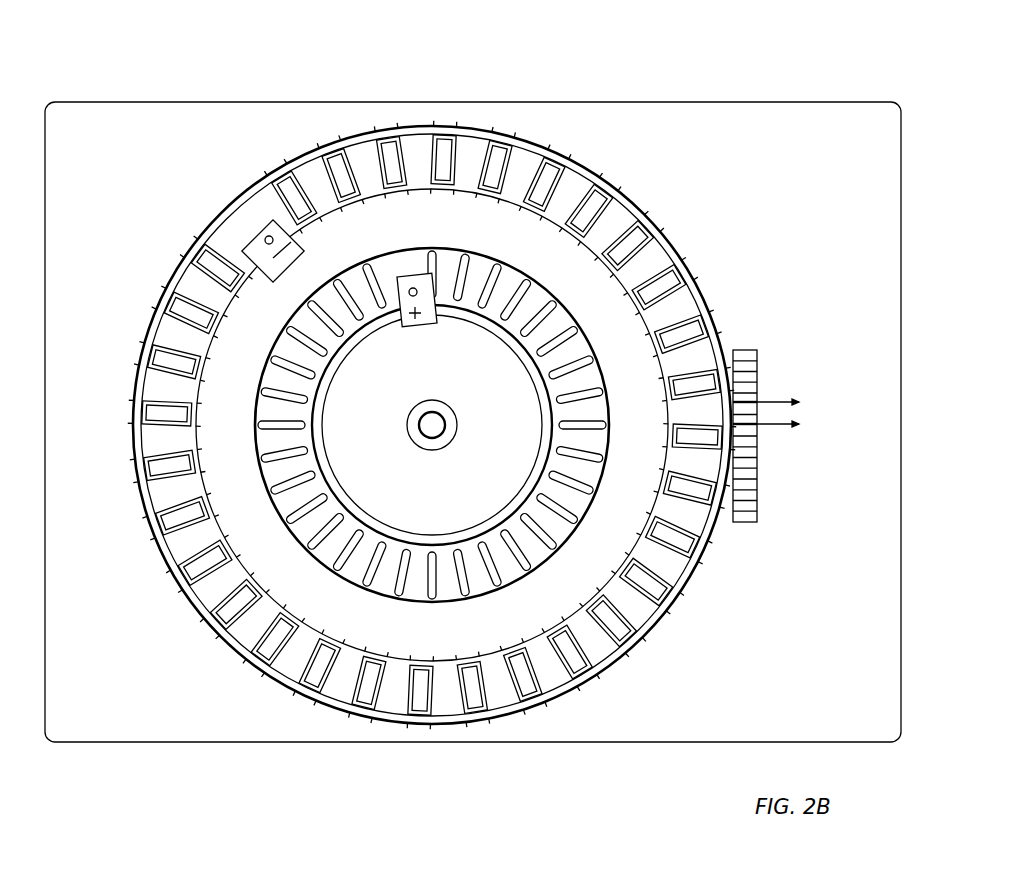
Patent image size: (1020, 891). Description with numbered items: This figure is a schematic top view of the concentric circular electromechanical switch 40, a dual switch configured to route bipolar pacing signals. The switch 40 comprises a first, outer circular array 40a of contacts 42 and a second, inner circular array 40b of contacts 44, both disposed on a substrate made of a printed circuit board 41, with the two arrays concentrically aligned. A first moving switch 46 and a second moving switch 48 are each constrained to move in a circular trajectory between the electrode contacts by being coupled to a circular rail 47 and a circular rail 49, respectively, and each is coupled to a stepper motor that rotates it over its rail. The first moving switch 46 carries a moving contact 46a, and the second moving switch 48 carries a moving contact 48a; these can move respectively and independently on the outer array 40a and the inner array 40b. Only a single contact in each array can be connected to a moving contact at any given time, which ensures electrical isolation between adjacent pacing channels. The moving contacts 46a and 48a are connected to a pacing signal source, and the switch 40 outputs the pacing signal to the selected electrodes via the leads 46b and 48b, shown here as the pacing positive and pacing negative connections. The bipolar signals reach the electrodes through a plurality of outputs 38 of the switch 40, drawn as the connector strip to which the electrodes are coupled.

The outputs 38 is at (818, 442).
The concentric circular electromechanical switch 40 is at (766, 88).
The outer circular array 40a is at (442, 424).
The inner circular array 40b is at (532, 392).
The printed circuit board 41 is at (89, 138).
The contacts 42 is at (196, 578).
The contacts 44 is at (481, 270).
The first moving switch 46 is at (223, 201).
The moving contact 46a is at (255, 241).
The lead 46b is at (762, 402).
The circular rail 47 is at (180, 337).
The second moving switch 48 is at (401, 270).
The moving contact 48a is at (414, 273).
The lead 48b is at (762, 424).
The circular rail 49 is at (372, 522).